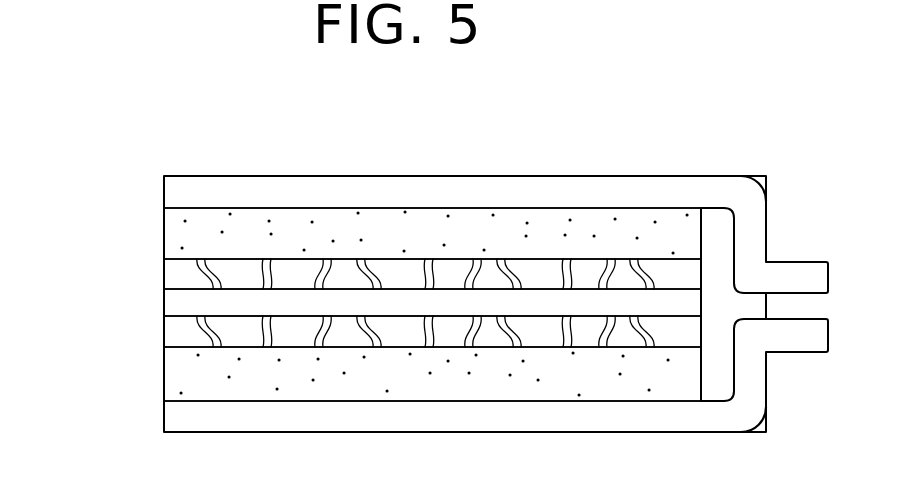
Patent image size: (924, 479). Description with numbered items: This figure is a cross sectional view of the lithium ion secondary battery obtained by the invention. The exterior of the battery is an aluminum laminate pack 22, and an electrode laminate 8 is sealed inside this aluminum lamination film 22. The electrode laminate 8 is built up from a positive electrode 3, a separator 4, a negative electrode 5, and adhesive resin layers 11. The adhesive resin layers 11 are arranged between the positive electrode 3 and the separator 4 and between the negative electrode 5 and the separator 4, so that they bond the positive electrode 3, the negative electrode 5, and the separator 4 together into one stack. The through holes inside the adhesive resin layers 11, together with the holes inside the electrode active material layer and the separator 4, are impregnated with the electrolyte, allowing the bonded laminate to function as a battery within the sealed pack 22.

The aluminum laminate pack 22 is at (668, 176).
The electrode laminate 8 is at (68, 197).
The positive electrode 3 is at (152, 190).
The adhesive resin layers 11 is at (175, 277).
The separator 4 is at (174, 303).
The negative electrode 5 is at (145, 377).